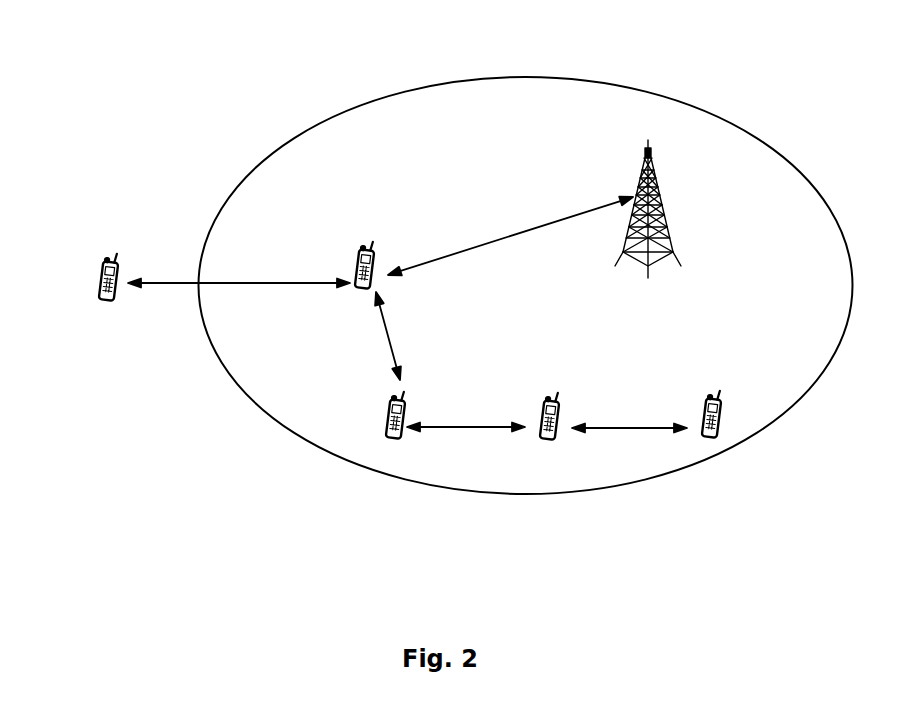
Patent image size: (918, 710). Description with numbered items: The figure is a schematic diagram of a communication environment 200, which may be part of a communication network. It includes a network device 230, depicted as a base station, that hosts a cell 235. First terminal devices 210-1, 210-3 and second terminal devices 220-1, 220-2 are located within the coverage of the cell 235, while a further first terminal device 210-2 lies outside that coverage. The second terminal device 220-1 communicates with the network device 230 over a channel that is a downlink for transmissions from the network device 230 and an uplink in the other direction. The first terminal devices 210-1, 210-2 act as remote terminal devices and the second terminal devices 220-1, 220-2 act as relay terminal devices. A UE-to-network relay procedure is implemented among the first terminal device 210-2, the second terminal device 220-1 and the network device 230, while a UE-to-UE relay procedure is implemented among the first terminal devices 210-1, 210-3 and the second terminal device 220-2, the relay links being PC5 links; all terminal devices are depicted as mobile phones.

The communication environment 200 is at (222, 45).
The cell 235 is at (658, 95).
The network device 230 is at (655, 165).
The second terminal device 220-1 is at (358, 265).
The second terminal device 220-2 is at (542, 412).
The first terminal device 210-1 is at (388, 412).
The first terminal device 210-2 is at (100, 275).
The first terminal device 210-3 is at (703, 412).